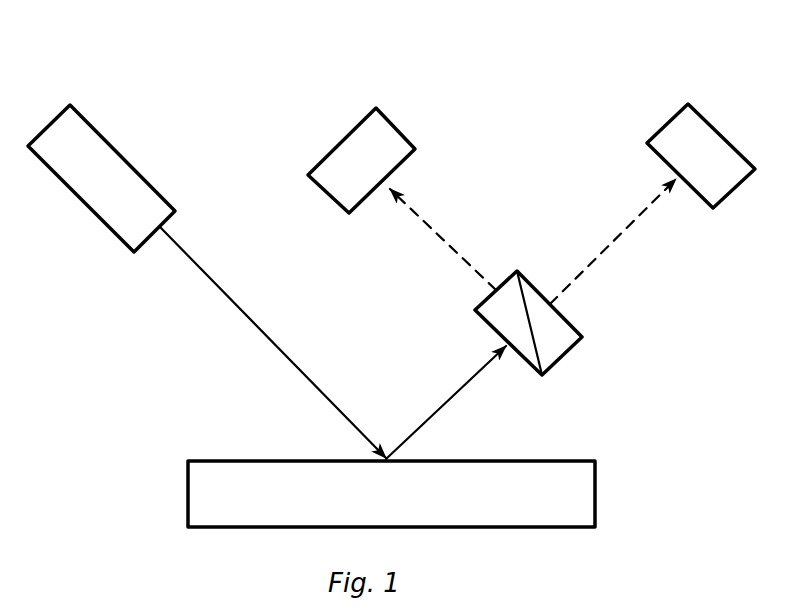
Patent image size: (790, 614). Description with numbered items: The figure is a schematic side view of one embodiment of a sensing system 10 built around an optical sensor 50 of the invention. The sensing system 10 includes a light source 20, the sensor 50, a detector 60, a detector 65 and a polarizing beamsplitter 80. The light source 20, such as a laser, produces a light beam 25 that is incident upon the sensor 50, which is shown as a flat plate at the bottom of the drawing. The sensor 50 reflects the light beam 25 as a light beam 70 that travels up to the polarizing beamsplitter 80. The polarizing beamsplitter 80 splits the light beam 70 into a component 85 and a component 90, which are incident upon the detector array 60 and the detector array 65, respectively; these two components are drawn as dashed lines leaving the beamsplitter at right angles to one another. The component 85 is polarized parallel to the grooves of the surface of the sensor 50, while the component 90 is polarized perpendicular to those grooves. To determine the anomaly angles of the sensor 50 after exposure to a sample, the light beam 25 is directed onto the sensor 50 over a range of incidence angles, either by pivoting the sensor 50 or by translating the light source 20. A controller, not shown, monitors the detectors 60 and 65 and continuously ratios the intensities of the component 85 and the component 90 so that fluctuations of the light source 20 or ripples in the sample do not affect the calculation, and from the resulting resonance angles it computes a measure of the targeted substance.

The sensing system 10 is at (580, 86).
The light source 20 is at (132, 205).
The light beam 25 is at (197, 270).
The sensor 50 is at (364, 509).
The detector 60 is at (344, 172).
The detector 65 is at (681, 167).
The light beam 70 is at (452, 395).
The polarizing beamsplitter 80 is at (567, 355).
The component 85 is at (433, 232).
The component 90 is at (597, 257).